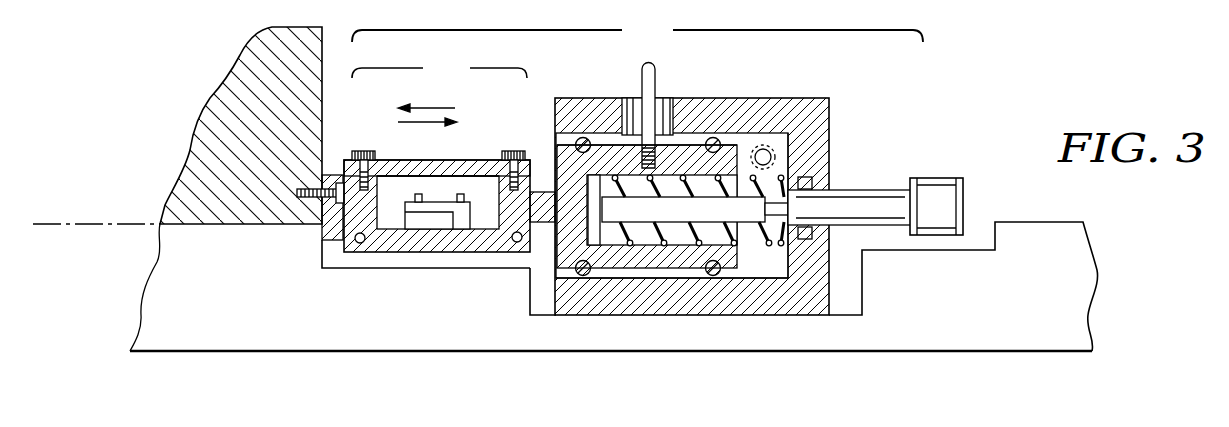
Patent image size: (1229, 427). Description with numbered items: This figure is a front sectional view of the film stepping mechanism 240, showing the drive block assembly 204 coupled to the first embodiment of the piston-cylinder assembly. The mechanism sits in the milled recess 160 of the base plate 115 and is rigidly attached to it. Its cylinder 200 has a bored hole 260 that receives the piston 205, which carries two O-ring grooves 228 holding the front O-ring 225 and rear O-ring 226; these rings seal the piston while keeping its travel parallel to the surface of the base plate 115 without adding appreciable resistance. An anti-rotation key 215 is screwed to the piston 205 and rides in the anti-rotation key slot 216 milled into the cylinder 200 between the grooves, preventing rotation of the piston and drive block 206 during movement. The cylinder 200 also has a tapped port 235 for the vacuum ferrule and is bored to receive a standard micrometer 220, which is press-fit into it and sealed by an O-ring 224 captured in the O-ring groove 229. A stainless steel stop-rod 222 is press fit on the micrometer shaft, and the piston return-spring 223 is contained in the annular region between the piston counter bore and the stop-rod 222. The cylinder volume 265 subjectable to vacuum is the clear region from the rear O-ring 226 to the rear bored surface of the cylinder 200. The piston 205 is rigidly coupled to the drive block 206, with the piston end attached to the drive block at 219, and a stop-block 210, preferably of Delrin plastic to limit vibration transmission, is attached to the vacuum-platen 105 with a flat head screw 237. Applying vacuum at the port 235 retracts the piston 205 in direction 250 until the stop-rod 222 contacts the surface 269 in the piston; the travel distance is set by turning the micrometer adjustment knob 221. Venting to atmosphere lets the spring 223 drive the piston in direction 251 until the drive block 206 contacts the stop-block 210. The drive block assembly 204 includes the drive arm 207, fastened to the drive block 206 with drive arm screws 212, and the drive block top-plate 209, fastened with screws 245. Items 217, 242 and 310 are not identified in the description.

The vacuum-platen 105 is at (238, 70).
The base plate 115 is at (168, 290).
The milled recess 160 is at (848, 293).
The cylinder 200 is at (733, 103).
The drive block assembly 204 is at (455, 277).
The piston 205 is at (610, 150).
The drive block 206 is at (385, 242).
The drive arm 207 is at (427, 223).
The drive block top-plate 209 is at (390, 165).
The stop-block 210 is at (330, 230).
The drive arm screws 212 is at (460, 194).
The anti-rotation key 215 is at (641, 79).
The anti-rotation key slot 216 is at (667, 110).
The inner body 217 is at (670, 160).
The attachment point 219 is at (540, 192).
The micrometer 220 is at (870, 190).
The micrometer adjustment knob 221 is at (942, 180).
The stop-rod 222 is at (678, 215).
The piston return-spring 223 is at (748, 230).
The O-ring 224 is at (812, 233).
The front O-ring 225 is at (582, 277).
The rear O-ring 226 is at (710, 276).
The O-ring grooves 228 is at (590, 276).
The O-ring groove 229 is at (812, 182).
The tapped port 235 is at (766, 149).
The flat head screw 237 is at (312, 190).
The film stepping mechanism 240 is at (637, 33).
The base plate 242 is at (340, 268).
The screws 245 is at (350, 152).
The retraction direction 250 is at (437, 177).
The return direction 251 is at (427, 92).
The bored hole 260 is at (637, 275).
The cylinder volume 265 is at (795, 270).
The surface 269 is at (540, 275).
The axis 310 is at (70, 224).